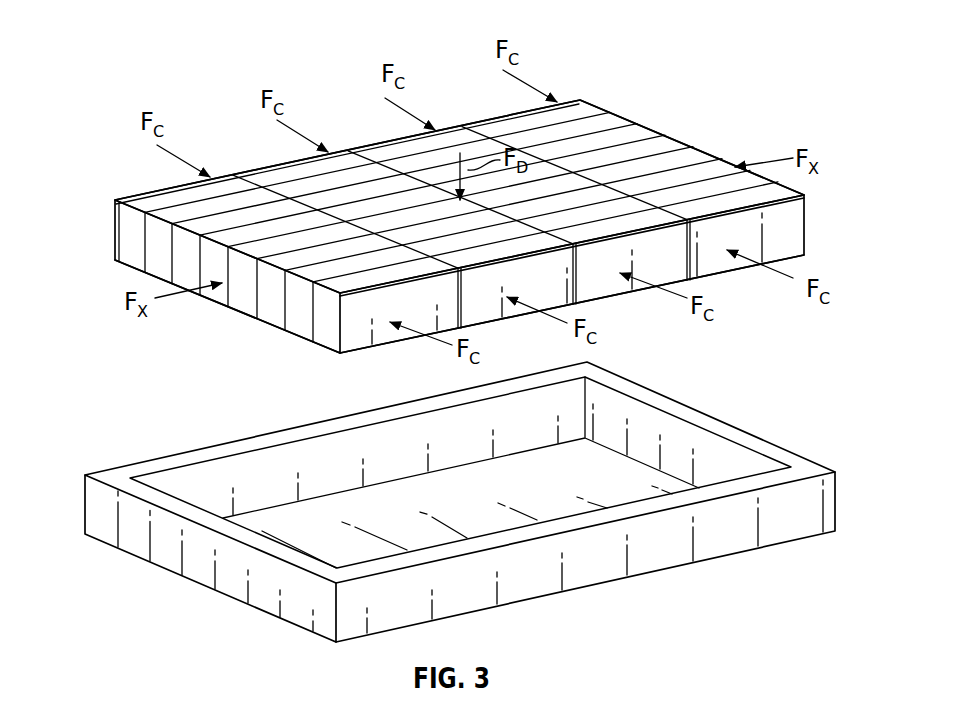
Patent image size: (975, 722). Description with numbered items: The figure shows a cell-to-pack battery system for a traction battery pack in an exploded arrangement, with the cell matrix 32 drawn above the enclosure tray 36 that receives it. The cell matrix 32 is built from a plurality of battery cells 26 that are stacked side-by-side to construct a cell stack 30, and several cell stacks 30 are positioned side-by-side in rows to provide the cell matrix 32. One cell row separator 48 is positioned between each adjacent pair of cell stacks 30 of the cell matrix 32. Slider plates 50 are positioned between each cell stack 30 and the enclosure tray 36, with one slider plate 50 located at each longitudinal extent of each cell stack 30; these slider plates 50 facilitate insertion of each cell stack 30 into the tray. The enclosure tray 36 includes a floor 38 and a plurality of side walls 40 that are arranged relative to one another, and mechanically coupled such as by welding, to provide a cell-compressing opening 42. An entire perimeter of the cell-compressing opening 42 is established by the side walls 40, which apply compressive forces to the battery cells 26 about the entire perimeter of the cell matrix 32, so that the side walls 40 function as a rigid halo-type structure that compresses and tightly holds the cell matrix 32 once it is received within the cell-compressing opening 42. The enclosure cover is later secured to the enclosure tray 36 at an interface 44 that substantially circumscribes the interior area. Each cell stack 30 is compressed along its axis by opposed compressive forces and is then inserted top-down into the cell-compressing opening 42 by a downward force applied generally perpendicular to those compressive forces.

The battery cell 26 is at (593, 113).
The cell stack 30 is at (167, 185).
The cell matrix 32 is at (702, 93).
The enclosure tray 36 is at (742, 527).
The floor 38 is at (598, 468).
The side wall 40 is at (107, 467).
The cell-compressing opening 42 is at (624, 492).
The interface 44 is at (213, 522).
The cell row separator 48 is at (358, 230).
The slider plate 50 is at (217, 177).